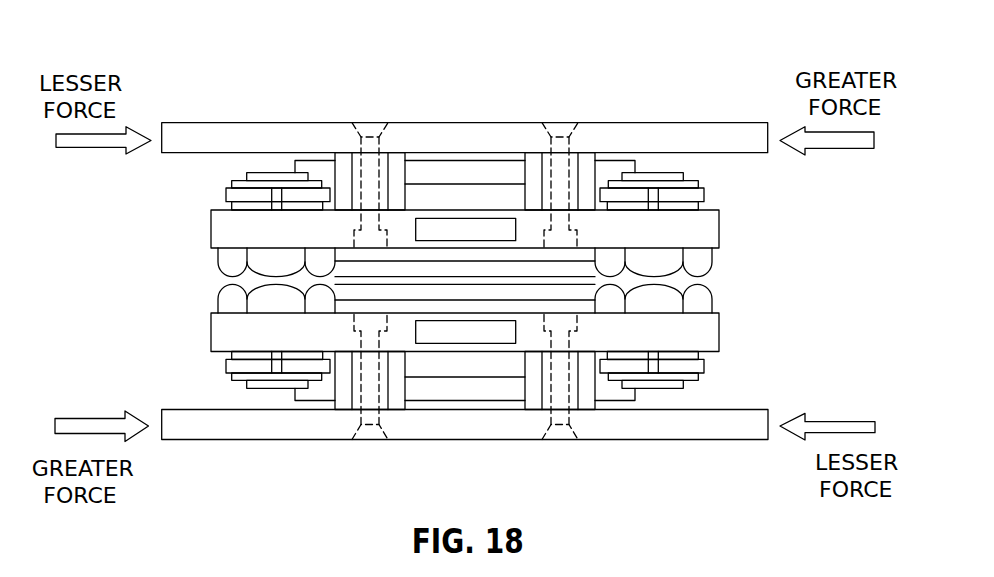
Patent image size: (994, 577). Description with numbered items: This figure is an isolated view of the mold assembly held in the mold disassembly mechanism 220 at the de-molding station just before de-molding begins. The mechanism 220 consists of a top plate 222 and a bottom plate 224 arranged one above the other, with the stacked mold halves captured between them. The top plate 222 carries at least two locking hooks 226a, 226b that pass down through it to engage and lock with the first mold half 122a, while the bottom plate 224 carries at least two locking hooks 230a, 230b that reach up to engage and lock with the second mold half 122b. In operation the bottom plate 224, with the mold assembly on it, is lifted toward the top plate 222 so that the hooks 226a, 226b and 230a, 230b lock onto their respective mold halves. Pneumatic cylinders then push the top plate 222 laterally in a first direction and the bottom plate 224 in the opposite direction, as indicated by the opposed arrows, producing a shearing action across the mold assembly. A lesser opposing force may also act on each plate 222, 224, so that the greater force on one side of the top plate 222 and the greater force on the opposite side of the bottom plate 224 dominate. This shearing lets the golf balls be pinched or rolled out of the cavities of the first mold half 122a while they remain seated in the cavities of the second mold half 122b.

The mold disassembly mechanism 220 is at (285, 53).
The top plate 222 is at (257, 123).
The bottom plate 224 is at (195, 409).
The locking hook 226a is at (559, 122).
The locking hook 226b is at (367, 122).
The locking hook 230a is at (557, 442).
The locking hook 230b is at (375, 442).
The first mold half 122a is at (712, 229).
The second mold half 122b is at (712, 332).